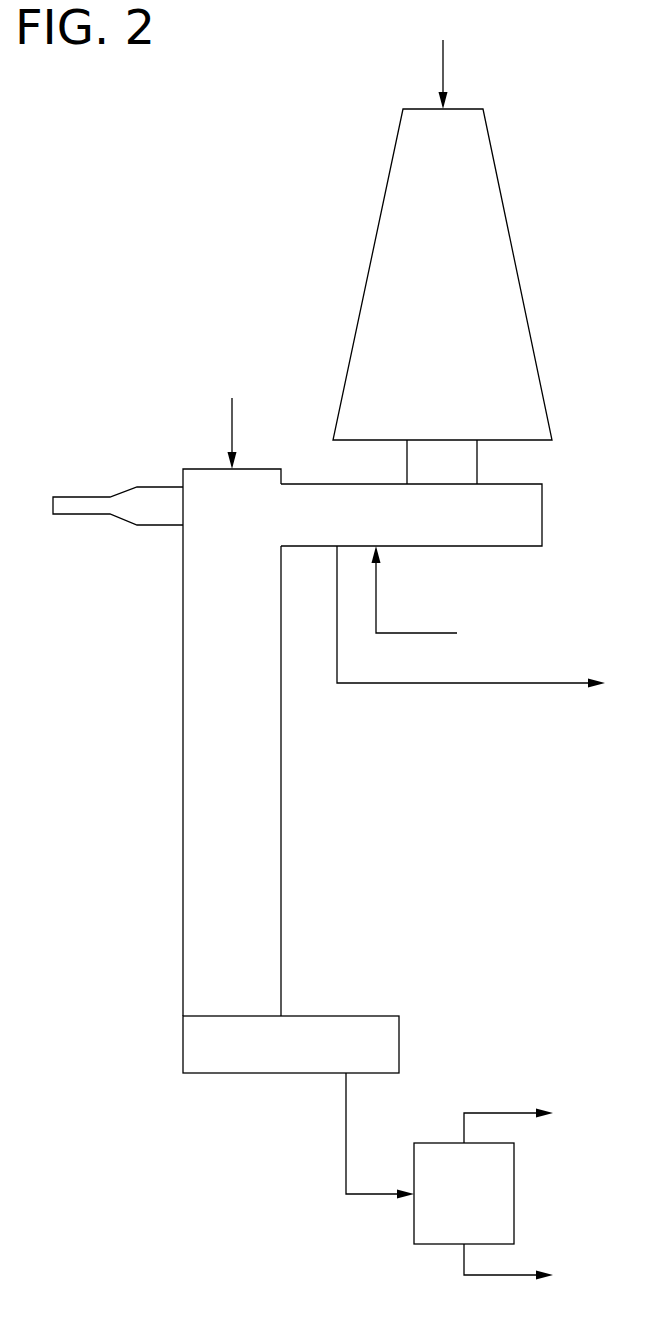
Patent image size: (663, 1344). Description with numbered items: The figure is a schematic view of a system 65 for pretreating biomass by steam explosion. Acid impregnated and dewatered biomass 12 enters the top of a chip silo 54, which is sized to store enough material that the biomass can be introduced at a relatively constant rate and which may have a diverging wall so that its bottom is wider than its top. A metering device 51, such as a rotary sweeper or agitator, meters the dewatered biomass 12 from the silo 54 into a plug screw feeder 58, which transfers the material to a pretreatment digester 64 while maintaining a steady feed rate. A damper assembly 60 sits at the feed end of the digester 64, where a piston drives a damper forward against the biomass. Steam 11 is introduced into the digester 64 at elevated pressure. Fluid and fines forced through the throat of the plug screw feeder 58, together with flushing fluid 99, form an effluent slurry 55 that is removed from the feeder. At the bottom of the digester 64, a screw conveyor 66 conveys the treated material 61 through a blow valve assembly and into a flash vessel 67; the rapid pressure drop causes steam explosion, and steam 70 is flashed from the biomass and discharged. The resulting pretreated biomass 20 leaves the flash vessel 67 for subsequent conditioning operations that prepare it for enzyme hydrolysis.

The system 65 is at (200, 228).
The dewatered biomass 12 is at (443, 72).
The chip silo 54 is at (505, 208).
The metering device 51 is at (477, 463).
The plug screw feeder 58 is at (480, 546).
The steam 11 is at (232, 425).
The damper assembly 60 is at (88, 497).
The pretreatment digester 64 is at (281, 752).
The flushing fluid 99 is at (392, 633).
The effluent slurry 55 is at (493, 683).
The screw conveyor 66 is at (378, 1016).
The treated material 61 is at (346, 1097).
The flash vessel 67 is at (514, 1157).
The steam 70 is at (513, 1113).
The pretreated biomass 20 is at (513, 1275).